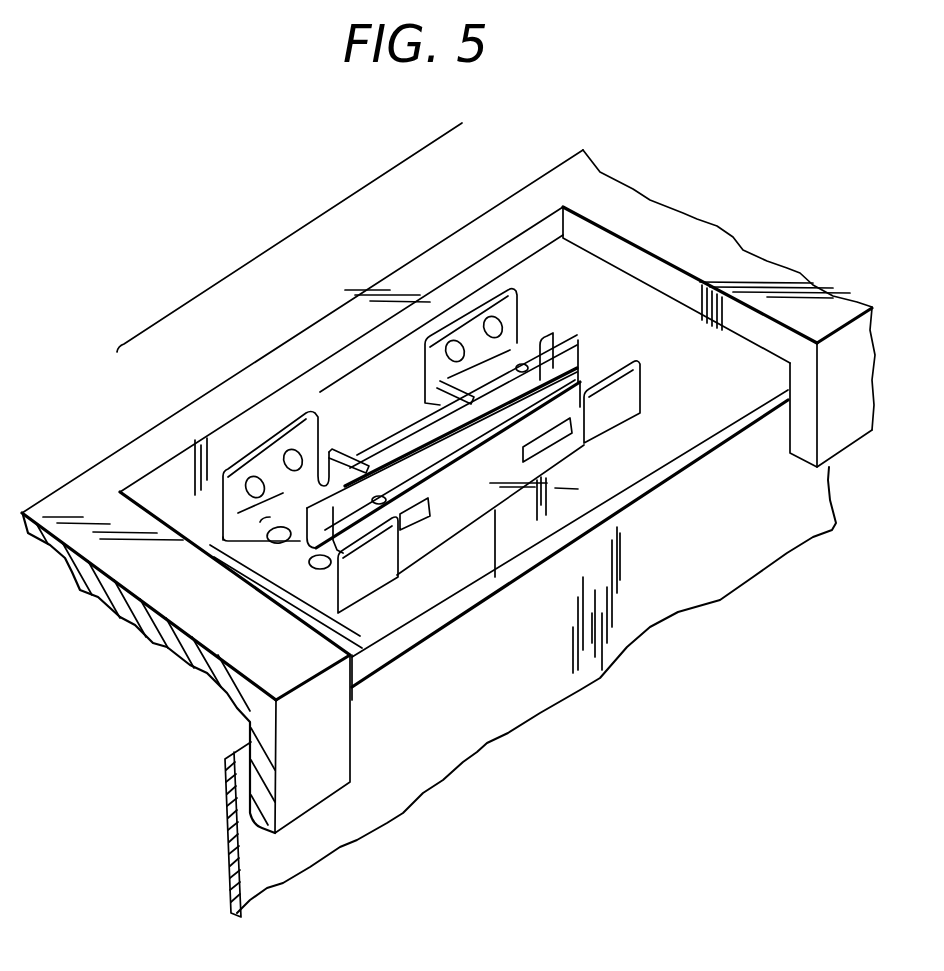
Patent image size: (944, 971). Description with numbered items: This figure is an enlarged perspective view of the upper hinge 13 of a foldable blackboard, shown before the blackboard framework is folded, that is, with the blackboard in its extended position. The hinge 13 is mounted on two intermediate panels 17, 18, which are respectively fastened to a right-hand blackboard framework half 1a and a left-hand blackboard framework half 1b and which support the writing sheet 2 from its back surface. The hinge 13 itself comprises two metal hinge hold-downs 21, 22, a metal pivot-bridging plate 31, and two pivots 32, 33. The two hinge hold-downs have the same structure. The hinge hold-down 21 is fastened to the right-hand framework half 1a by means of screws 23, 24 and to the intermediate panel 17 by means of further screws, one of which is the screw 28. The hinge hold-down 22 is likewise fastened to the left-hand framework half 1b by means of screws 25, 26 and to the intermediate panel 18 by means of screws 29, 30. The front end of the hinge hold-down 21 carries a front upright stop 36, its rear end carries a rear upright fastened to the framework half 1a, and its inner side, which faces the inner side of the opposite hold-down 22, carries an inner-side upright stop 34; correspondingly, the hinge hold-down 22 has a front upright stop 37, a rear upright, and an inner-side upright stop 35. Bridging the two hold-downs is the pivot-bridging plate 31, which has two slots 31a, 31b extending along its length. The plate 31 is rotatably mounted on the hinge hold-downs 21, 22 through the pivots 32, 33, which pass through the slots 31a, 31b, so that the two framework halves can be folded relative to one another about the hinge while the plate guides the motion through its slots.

The right-hand blackboard framework half 1a is at (717, 240).
The left-hand blackboard framework half 1b is at (253, 670).
The writing sheet 2 is at (527, 670).
The upper hinge 13 is at (318, 217).
The intermediate panel 17 is at (620, 477).
The intermediate panel 18 is at (415, 617).
The hinge hold-down 21 is at (383, 417).
The hinge hold-down 22 is at (370, 540).
The screw 23 is at (451, 288).
The screw 24 is at (457, 340).
The screw 25 is at (281, 430).
The screw 26 is at (290, 448).
The screw 28 is at (520, 362).
The screw 29 is at (300, 550).
The screw 30 is at (235, 552).
The pivot-bridging plate 31 is at (395, 439).
The slot 31a is at (540, 377).
The slot 31b is at (300, 568).
The pivot 32 is at (427, 423).
The pivot 33 is at (378, 495).
The inner-side upright stop 34 is at (437, 380).
The inner-side upright stop 35 is at (330, 445).
The front upright stop 36 is at (618, 418).
The front upright stop 37 is at (358, 580).